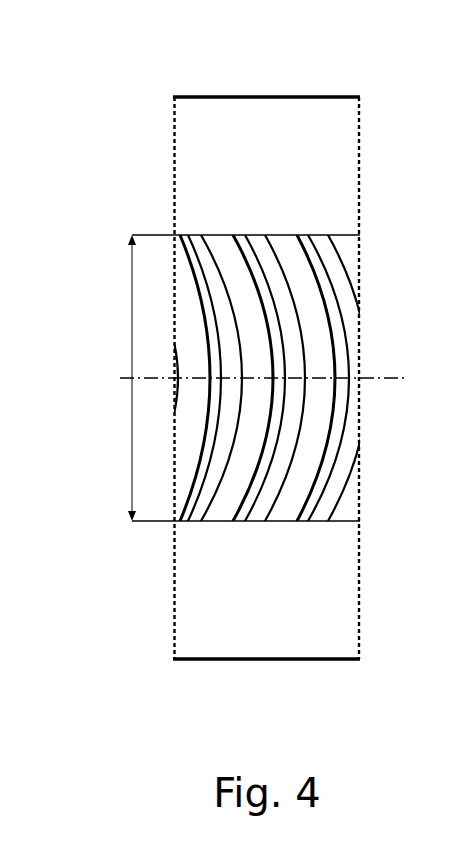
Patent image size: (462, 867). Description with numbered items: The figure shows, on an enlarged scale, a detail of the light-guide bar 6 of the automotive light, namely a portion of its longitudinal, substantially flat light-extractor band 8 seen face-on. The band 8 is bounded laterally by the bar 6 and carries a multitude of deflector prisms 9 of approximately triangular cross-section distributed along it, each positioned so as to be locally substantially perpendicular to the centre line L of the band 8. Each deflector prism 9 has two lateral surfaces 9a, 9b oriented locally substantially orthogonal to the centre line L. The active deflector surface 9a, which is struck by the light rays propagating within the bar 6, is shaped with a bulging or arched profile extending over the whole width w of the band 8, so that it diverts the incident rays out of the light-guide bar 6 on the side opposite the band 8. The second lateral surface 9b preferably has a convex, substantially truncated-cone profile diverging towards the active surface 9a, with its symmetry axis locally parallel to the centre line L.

The light-guide bar 6 is at (307, 125).
The longitudinal light-extractor band 8 is at (253, 440).
The deflector prism 9 is at (253, 476).
The active deflector surface 9a is at (200, 293).
The second lateral surface 9b is at (290, 409).
The width of the longitudinal band w is at (119, 378).
The centre line of the longitudinal band L is at (277, 379).